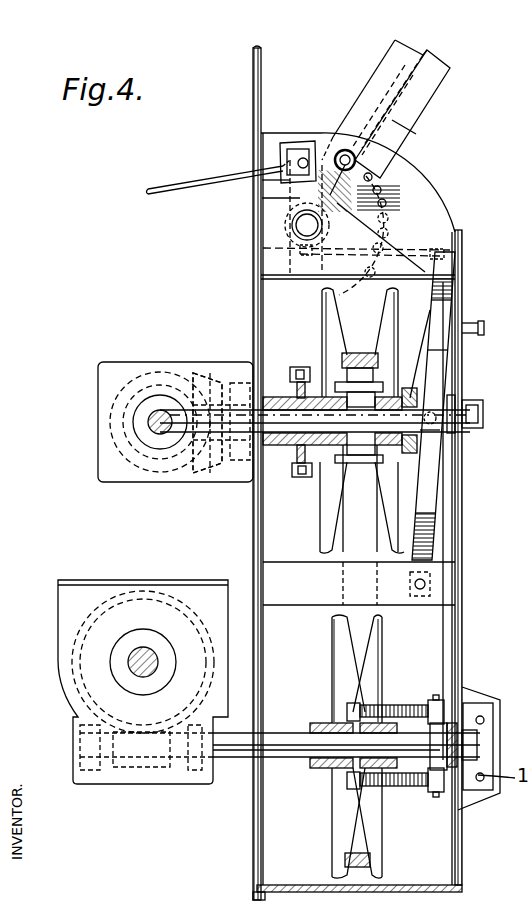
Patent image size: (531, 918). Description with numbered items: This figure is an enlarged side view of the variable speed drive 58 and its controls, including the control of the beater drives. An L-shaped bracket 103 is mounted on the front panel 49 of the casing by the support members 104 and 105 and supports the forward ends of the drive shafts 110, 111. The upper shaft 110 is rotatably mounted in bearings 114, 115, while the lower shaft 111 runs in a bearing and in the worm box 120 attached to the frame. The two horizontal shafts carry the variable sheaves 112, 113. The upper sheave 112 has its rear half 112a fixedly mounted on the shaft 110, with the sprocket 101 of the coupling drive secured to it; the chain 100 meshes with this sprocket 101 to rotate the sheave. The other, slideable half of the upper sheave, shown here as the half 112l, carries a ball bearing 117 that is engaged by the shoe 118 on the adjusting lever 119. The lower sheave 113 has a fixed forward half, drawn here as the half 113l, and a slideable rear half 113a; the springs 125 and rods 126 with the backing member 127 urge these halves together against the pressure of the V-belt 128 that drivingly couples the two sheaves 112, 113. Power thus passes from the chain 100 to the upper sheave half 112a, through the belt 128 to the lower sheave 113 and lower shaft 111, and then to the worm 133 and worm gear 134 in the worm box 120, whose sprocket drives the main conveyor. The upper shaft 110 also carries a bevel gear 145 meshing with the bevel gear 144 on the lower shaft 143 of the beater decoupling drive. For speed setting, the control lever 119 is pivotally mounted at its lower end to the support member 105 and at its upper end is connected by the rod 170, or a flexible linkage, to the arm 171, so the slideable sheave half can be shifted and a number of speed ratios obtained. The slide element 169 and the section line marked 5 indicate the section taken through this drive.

The section line 5- 5 is at (455, 232).
The front panel 49 is at (253, 96).
The variable speed drive 58 is at (232, 289).
The chain 100 is at (304, 366).
The sprocket 101 is at (306, 466).
The L-shaped bracket 103 is at (462, 528).
The support member 104 is at (415, 218).
The support member 105 is at (437, 594).
The upper shaft 110 is at (482, 414).
The lower shaft 111 is at (477, 746).
The upper sheave 112 is at (388, 416).
The rear half of upper sheave 112a is at (322, 321).
The sheave flange 112l is at (380, 346).
The lower sheave 113 is at (384, 745).
The rear half of lower sheave 113a is at (333, 638).
The sheave flange 113l is at (378, 636).
The bearing 114 is at (244, 384).
The bearing 115 is at (455, 395).
The ball bearing 117 is at (442, 303).
The shoe 118 is at (447, 461).
The adjusting lever 119 is at (436, 372).
The worm box 120 is at (60, 680).
The spring 125 is at (400, 705).
The rod 126 is at (448, 700).
The backing member 127 is at (464, 812).
The V-belt 128 is at (342, 552).
The worm 133 is at (141, 770).
The worm gear 134 is at (85, 620).
The lower shaft 143 is at (150, 428).
The bevel gear 144 is at (108, 413).
The bevel gear 145 is at (212, 470).
The slide 169 is at (420, 520).
The rod 170 is at (458, 217).
The arm 171 is at (252, 250).